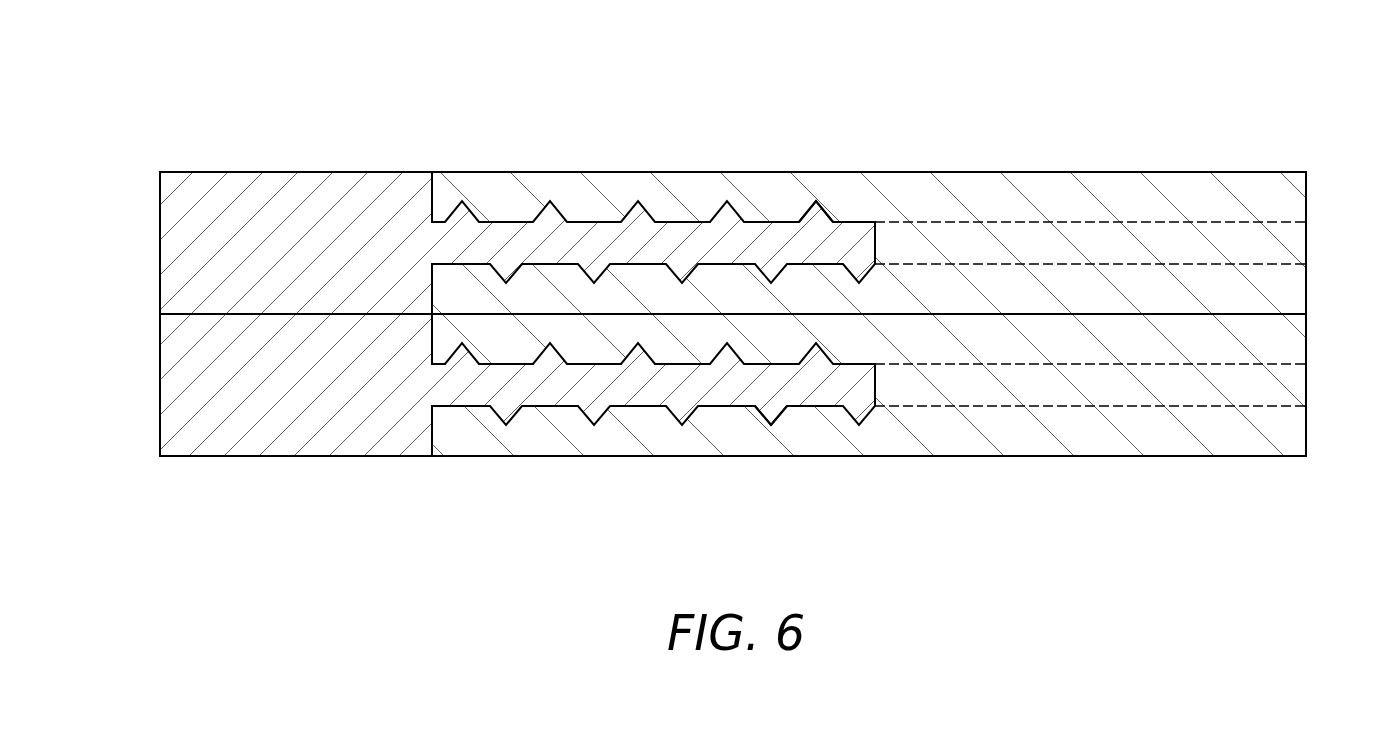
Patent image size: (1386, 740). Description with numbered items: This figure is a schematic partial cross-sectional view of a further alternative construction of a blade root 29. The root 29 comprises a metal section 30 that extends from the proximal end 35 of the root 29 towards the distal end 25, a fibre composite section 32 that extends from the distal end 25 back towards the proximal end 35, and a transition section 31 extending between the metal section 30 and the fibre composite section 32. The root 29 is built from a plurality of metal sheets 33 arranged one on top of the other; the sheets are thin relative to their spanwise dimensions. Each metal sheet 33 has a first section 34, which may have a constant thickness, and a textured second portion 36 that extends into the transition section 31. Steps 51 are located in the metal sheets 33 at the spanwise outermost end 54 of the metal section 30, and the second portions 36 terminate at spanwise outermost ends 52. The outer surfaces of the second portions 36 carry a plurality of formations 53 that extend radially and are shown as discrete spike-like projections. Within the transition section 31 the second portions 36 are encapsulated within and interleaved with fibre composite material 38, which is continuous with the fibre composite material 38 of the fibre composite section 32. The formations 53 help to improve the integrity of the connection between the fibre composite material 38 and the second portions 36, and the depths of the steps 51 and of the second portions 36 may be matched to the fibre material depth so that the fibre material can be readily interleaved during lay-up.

The distal end 25 is at (1306, 185).
The root 29 is at (170, 101).
The metal section 30 is at (428, 520).
The transition section 31 is at (870, 520).
The fibre composite section 32 is at (1305, 520).
The metal sheets 33 is at (242, 180).
The first sections 34 is at (170, 212).
The proximal end 35 is at (162, 282).
The second portions 36 is at (682, 230).
The fibre composite material 38 is at (1272, 182).
The steps 51 is at (433, 188).
The spanwise outermost ends 52 is at (877, 243).
The formations 53 is at (816, 203).
The spanwise outermost end 54 is at (433, 175).